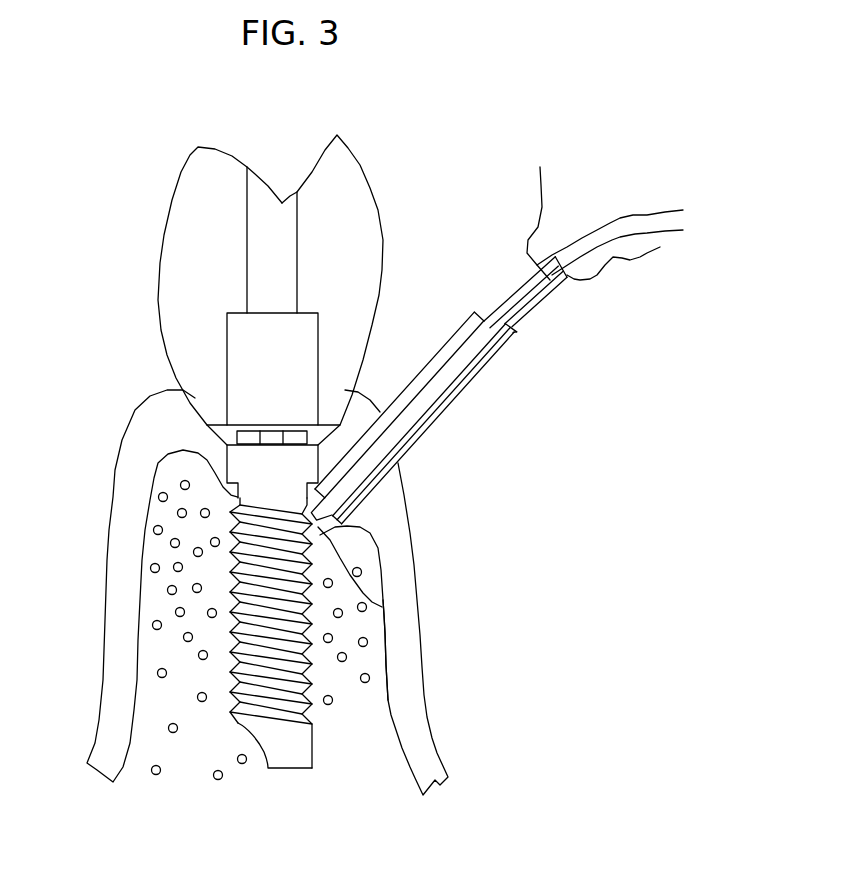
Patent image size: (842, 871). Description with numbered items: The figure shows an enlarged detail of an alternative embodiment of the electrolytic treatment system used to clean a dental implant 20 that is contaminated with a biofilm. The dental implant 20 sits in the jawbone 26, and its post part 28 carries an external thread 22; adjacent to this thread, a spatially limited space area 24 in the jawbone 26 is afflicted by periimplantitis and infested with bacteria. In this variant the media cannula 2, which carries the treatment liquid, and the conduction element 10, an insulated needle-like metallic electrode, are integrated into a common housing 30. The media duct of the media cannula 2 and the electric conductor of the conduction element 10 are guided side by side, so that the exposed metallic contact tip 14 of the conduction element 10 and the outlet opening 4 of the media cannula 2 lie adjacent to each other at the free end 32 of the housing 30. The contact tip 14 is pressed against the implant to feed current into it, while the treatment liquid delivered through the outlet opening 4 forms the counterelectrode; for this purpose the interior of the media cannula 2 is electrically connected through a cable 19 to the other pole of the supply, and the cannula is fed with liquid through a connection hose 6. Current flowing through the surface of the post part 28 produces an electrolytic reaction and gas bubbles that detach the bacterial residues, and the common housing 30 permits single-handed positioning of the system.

The media cannula 2 is at (458, 367).
The outlet opening 4 is at (385, 605).
The connection hose 6 is at (623, 227).
The conduction element 10 is at (517, 332).
The contact tip 14 is at (380, 565).
The cable 19 is at (540, 200).
The dental implant 20 is at (175, 641).
The external thread 22 is at (233, 612).
The space area 24 is at (370, 657).
The jawbone 26 is at (356, 747).
The post part 28 is at (285, 775).
The common housing 30 is at (433, 430).
The free end 32 is at (330, 536).